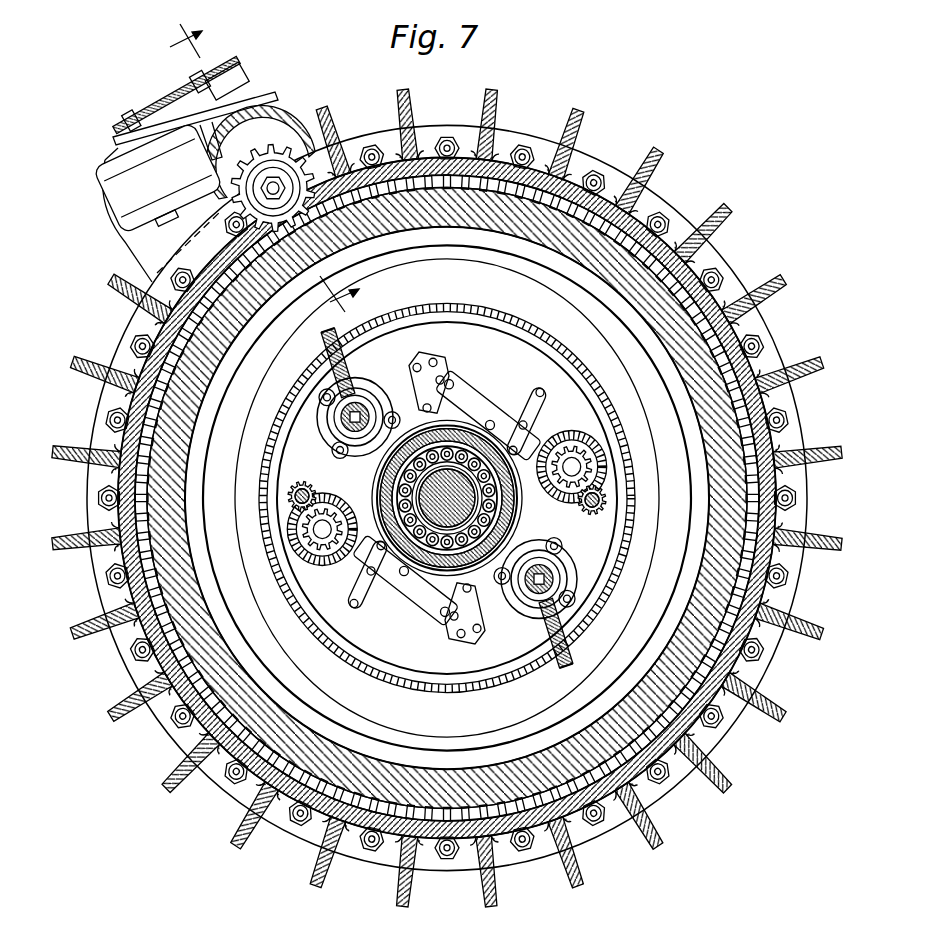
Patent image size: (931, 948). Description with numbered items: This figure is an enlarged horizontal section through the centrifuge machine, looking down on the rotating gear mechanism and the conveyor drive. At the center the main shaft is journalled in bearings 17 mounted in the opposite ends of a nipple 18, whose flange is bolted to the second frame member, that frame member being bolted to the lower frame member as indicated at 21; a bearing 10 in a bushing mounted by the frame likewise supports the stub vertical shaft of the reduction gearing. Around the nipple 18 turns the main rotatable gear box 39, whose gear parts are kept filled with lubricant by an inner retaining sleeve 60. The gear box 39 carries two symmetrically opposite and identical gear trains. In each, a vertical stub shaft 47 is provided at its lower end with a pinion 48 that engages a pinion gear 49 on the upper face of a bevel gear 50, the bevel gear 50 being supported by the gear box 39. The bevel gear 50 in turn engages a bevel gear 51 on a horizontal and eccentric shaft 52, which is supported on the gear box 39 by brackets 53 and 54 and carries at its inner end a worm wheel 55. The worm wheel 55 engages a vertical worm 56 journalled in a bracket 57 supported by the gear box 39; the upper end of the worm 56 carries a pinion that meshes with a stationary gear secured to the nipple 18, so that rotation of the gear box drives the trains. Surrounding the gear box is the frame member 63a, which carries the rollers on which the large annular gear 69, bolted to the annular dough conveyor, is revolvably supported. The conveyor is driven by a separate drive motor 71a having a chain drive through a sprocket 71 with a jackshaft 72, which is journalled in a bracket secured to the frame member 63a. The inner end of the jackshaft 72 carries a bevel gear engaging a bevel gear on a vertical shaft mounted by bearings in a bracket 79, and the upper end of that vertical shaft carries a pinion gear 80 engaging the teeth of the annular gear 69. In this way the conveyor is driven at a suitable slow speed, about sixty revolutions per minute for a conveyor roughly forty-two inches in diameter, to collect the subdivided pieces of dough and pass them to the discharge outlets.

The bearing 10 is at (249, 171).
The bearings 17 is at (442, 446).
The nipple 18 is at (492, 493).
The bolting 21 is at (796, 418).
The main rotatable gear box 39 is at (574, 353).
The vertical stub shaft 47 is at (602, 495).
The pinion 48 is at (606, 503).
The pinion gear 49 is at (602, 458).
The bevel gear 50 is at (598, 442).
The bevel gear 51 is at (572, 447).
The horizontal eccentric shaft 52 is at (474, 412).
The bracket 53 is at (541, 393).
The bracket 54 is at (437, 362).
The worm wheel 55 is at (387, 340).
The vertical worm 56 is at (322, 398).
The bracket 57 is at (328, 418).
The inner retaining sleeve 60 is at (515, 524).
The frame member 63a is at (521, 128).
The large annular gear 69 is at (345, 214).
The sprocket 71 is at (239, 62).
The drive motor 71a is at (160, 181).
The jackshaft 72 is at (234, 100).
The bracket 79 is at (276, 192).
The pinion gear 80 is at (281, 182).